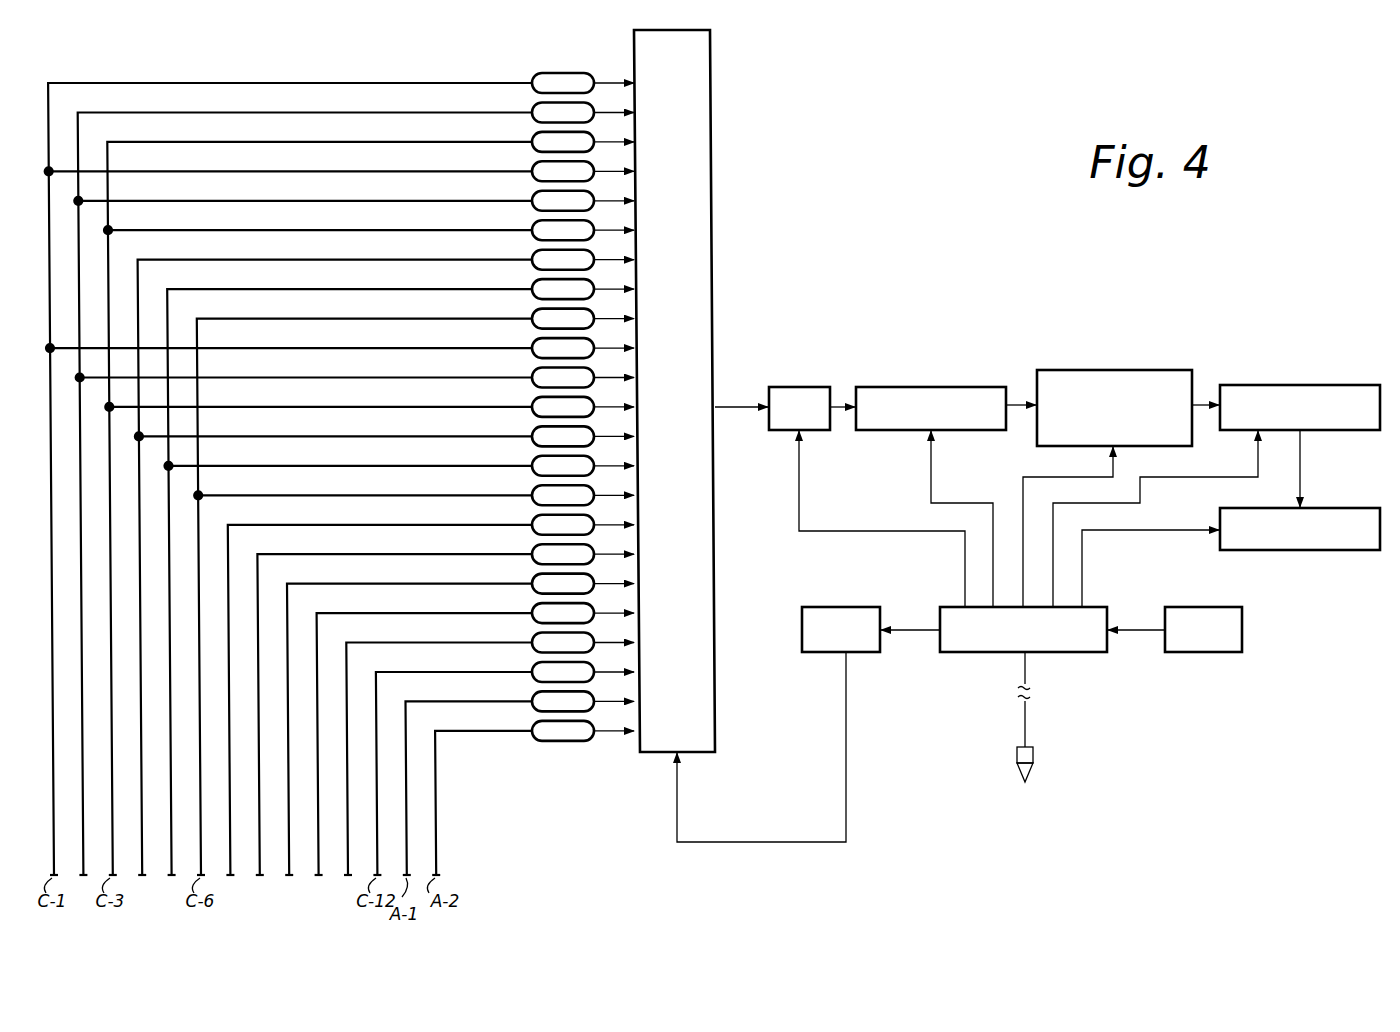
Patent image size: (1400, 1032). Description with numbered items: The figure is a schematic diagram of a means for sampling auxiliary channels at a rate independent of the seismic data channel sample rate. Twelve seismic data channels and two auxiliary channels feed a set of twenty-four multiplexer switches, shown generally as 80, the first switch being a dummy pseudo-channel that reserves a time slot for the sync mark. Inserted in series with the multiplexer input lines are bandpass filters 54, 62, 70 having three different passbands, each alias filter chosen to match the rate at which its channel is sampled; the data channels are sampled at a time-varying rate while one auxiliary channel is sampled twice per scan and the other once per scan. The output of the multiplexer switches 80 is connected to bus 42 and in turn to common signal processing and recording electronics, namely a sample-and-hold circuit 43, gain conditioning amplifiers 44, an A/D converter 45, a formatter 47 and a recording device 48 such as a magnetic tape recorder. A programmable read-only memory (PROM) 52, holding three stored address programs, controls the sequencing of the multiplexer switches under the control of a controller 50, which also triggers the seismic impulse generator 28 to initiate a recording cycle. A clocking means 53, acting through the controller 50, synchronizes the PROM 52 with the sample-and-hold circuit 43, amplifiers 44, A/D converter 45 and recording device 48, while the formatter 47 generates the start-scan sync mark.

The seismic impulse generator 28 is at (1036, 758).
The bus 42 is at (735, 405).
The sample-and-hold circuit 43 is at (797, 387).
The gain conditioning amplifiers 44 is at (918, 387).
The A/D converter 45 is at (1112, 370).
The formatter 47 is at (1292, 385).
The recording device 48 is at (1340, 552).
The controller 50 is at (975, 654).
The programmable read-only memory (PROM) 52 is at (817, 654).
The clocking means 53 is at (1192, 654).
The bandpass filter 54 is at (532, 74).
The bandpass filter 62 is at (531, 166).
The bandpass filter 70 is at (533, 343).
The set of multiplexer switches 80 is at (711, 68).